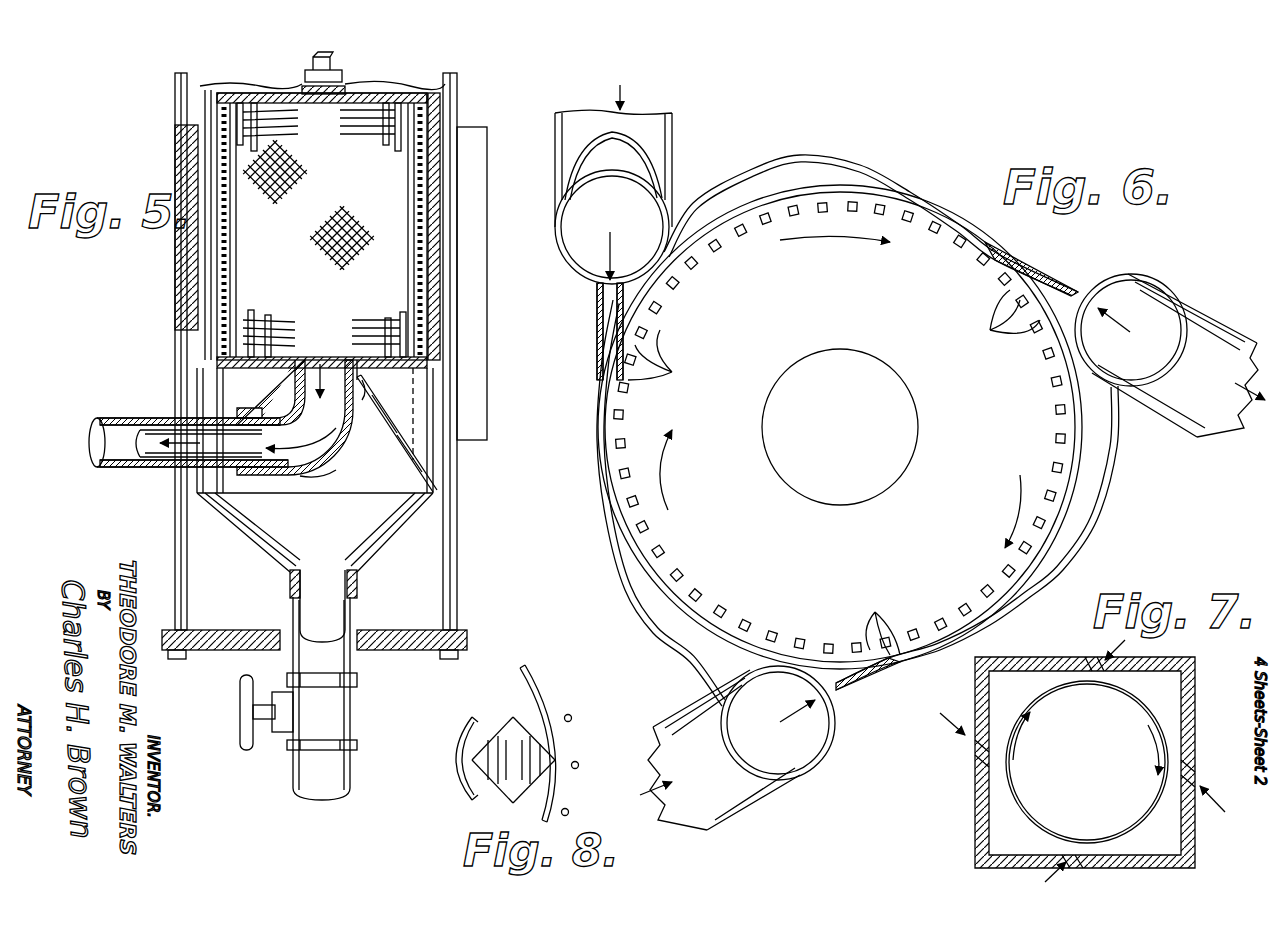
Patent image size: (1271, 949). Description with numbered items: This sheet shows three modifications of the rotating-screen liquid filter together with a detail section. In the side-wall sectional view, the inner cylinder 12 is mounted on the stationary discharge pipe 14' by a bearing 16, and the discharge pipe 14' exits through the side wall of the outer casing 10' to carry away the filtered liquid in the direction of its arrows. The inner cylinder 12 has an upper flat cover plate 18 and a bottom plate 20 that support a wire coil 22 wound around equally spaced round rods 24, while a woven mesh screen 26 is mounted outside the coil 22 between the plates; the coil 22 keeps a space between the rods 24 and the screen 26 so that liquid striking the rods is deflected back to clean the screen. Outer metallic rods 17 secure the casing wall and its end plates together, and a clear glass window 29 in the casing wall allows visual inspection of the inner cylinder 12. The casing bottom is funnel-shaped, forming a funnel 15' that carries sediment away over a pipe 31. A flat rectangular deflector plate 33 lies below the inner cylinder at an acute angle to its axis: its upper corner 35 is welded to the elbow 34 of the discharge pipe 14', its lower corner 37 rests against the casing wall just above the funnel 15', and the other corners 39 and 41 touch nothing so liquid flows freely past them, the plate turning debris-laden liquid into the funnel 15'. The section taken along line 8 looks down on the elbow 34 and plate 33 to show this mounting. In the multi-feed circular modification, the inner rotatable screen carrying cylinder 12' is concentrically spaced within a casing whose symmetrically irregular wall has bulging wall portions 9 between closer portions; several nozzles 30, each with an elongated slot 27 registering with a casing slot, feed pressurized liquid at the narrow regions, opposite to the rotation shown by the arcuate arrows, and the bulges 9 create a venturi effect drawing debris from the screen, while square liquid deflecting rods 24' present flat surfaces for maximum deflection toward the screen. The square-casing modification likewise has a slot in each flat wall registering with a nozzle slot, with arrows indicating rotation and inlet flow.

In FIG. 5, the section line 8— 8 is at (335, 370).
In FIG. 6, the bulging wall portions 9 is at (790, 163).
In FIG. 5, the outer casing 10' is at (326, 456).
In FIG. 8, the outer casing 10' is at (551, 740).
In FIG. 6, the outer casing 10' is at (840, 407).
In FIG. 5, the inner cylinder 12 is at (322, 224).
In FIG. 7, the inner cylinder 12 is at (1087, 762).
In FIG. 6, the inner rotatable screen carrying cylinder 12' is at (840, 427).
In FIG. 5, the discharge pipe 14' is at (188, 422).
In FIG. 5, the funnel 15' is at (282, 594).
In FIG. 5, the bearing 16 is at (384, 390).
In FIG. 5, the outer metallic rods 17 is at (176, 496).
In FIG. 8, the outer metallic rods 17 is at (578, 762).
In FIG. 5, the upper flat cover plate 18 is at (262, 100).
In FIG. 5, the bottom plate 20 is at (278, 392).
In FIG. 5, the wire coil 22 is at (296, 115).
In FIG. 6, the wire coil 22 is at (658, 290).
In FIG. 5, the round rods 24 is at (325, 253).
In FIG. 6, the square liquid deflecting rods 24' is at (834, 472).
In FIG. 5, the woven mesh screen 26 is at (225, 222).
In FIG. 6, the woven mesh screen 26 is at (625, 556).
In FIG. 6, the nozzle slot 27 is at (604, 322).
In FIG. 7, the nozzle slot 27 is at (1098, 662).
In FIG. 5, the window 29 is at (174, 282).
In FIG. 5, the nozzle 30 is at (478, 262).
In FIG. 6, the nozzle 30 is at (582, 312).
In FIG. 5, the sediment pipe 31 is at (350, 715).
In FIG. 5, the deflector plate 33 is at (397, 440).
In FIG. 8, the deflector plate 33 is at (536, 780).
In FIG. 5, the elbow 34 is at (319, 480).
In FIG. 8, the elbow 34 is at (462, 722).
In FIG. 5, the upper corner 35 is at (345, 407).
In FIG. 8, the upper corner 35 is at (478, 748).
In FIG. 5, the lower corner 37 is at (425, 486).
In FIG. 8, the lower corner 37 is at (545, 748).
In FIG. 5, the free corner 39 is at (390, 436).
In FIG. 8, the free corner 39 is at (505, 800).
In FIG. 8, the free corner 41 is at (500, 728).